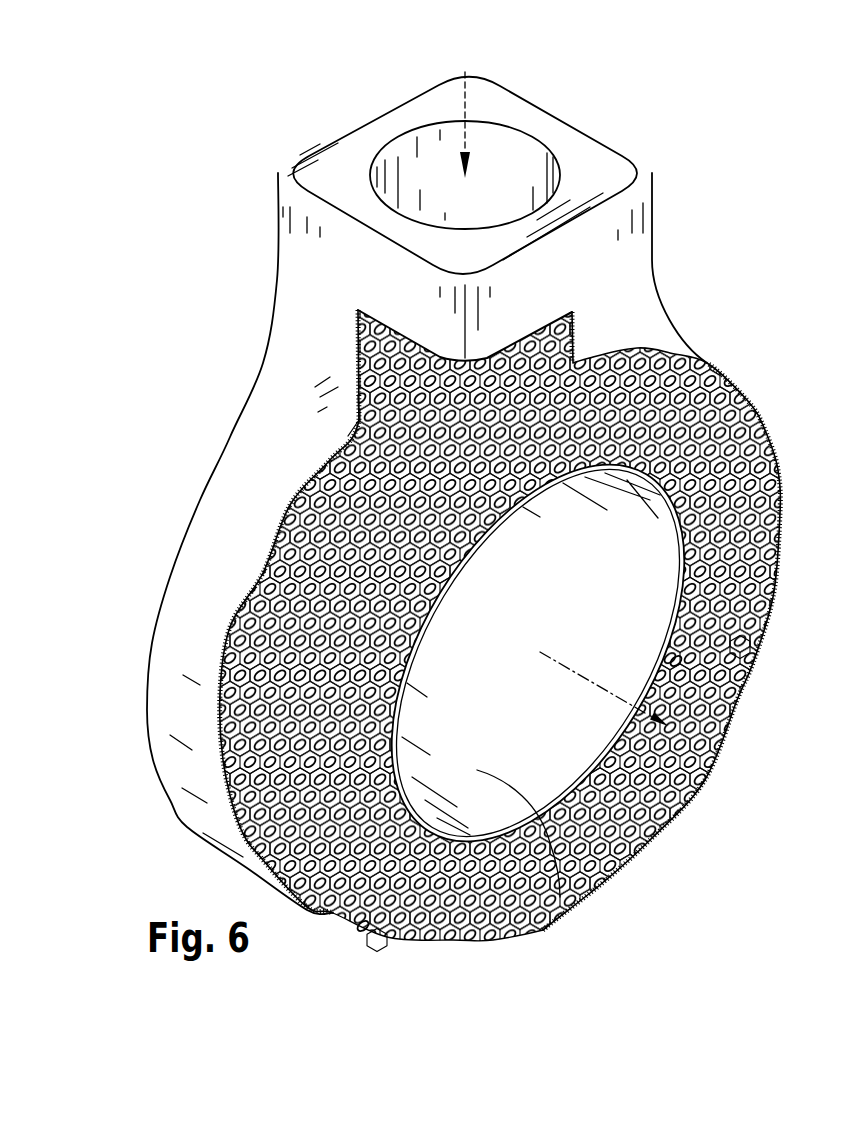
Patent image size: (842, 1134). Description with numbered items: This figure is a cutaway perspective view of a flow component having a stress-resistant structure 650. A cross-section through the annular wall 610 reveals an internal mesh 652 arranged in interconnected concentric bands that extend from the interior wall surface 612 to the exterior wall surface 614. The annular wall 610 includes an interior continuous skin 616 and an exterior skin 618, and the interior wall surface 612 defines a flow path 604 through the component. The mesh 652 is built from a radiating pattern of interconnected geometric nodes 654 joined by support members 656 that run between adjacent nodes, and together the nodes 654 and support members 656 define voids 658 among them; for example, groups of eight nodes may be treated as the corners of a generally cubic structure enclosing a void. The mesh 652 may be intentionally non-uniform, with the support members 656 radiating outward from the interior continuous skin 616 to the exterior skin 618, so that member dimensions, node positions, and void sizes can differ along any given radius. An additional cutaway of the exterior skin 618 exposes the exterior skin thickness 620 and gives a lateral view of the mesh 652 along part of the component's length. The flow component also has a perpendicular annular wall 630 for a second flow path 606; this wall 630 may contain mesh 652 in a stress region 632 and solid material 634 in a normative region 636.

The flow path 604 is at (562, 660).
The flow path 606 is at (467, 92).
The annular wall 610 is at (783, 478).
The interior wall surface 612 is at (527, 887).
The exterior wall surface 614 is at (633, 272).
The interior continuous skin 616 is at (597, 750).
The exterior skin 618 is at (670, 330).
The exterior skin thickness 620 is at (348, 427).
The perpendicular annular wall 630 is at (618, 155).
The stress region 632 is at (360, 357).
The solid material 634 is at (403, 300).
The normative region 636 is at (640, 210).
The stress-resistant structure 650 is at (547, 917).
The internal mesh 652 is at (563, 827).
The geometric nodes 654 is at (740, 690).
The support members 656 is at (680, 643).
The voids 658 is at (330, 460).